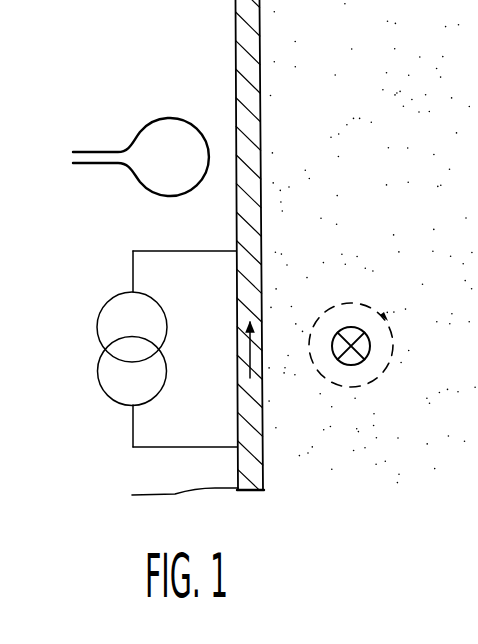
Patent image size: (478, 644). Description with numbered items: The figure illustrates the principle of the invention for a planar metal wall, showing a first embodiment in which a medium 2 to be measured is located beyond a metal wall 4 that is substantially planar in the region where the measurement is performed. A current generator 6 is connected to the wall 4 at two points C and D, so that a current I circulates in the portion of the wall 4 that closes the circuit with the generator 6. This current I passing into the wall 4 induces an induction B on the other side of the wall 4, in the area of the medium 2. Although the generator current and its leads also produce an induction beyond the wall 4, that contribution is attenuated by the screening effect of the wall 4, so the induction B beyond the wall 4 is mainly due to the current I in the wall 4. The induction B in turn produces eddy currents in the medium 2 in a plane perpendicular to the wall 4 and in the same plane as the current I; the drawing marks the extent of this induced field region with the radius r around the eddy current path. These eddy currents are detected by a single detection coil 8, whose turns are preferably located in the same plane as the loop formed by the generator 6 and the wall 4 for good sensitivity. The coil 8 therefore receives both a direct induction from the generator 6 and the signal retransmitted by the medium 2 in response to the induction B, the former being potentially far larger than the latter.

The medium to be measured 2 is at (319, 144).
The metal wall 4 is at (250, 42).
The current generator 6 is at (90, 377).
The detection coil 8 is at (152, 106).
The induction B is at (349, 272).
The connection point C is at (230, 254).
The connection point D is at (232, 444).
The current I is at (264, 360).
The radius of field circle r is at (392, 309).